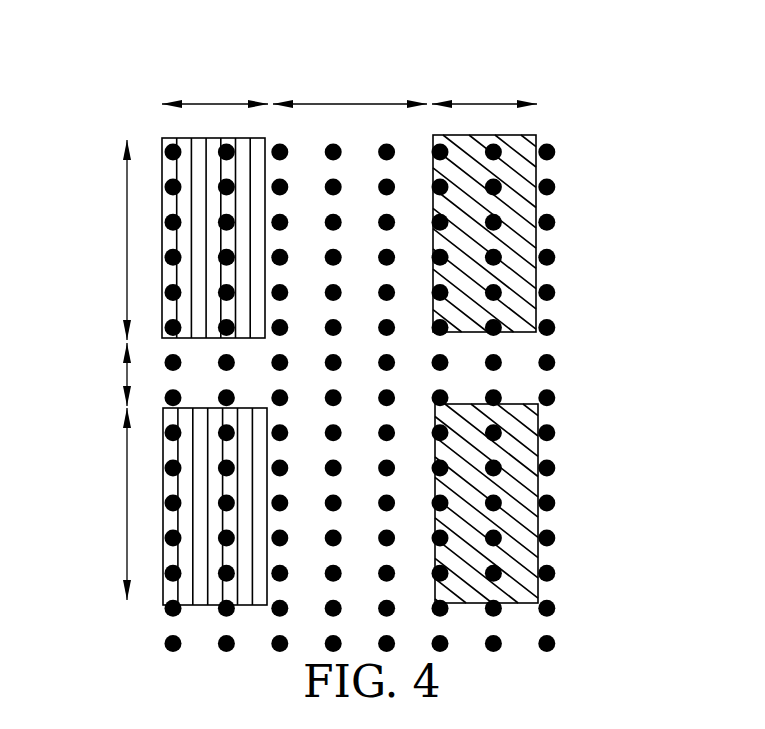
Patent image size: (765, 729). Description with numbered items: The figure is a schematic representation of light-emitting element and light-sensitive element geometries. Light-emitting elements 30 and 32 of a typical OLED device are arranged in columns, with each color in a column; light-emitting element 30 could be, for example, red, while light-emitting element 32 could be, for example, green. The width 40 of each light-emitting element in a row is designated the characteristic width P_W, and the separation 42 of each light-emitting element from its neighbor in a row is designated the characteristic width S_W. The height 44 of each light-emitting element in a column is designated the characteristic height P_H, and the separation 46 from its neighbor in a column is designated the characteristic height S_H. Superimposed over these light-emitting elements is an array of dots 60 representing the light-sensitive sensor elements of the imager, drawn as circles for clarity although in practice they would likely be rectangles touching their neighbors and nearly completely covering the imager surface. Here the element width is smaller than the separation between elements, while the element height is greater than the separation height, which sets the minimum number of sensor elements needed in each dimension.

The light-emitting element 30 is at (190, 146).
The light-emitting element 32 is at (530, 272).
The width 40 is at (207, 104).
The separation 42 is at (345, 104).
The height 44 is at (127, 232).
The separation 46 is at (127, 378).
The array of dots 60 is at (556, 151).